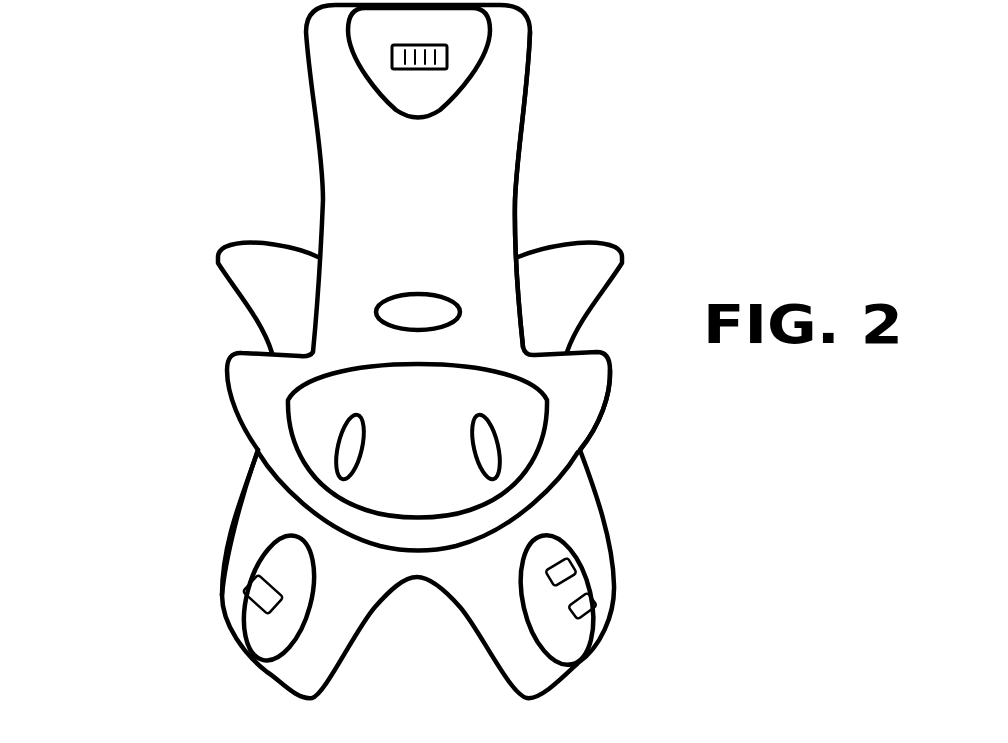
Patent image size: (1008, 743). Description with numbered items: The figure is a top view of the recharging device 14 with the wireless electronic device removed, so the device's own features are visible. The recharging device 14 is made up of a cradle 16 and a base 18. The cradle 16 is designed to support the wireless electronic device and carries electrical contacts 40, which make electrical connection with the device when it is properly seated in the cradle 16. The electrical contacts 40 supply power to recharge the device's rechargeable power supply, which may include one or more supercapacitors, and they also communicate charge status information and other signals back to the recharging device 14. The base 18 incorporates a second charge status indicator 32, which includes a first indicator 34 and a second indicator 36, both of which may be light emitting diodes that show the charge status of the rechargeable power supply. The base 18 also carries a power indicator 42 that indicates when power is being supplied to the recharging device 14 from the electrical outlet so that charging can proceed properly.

The recharging device 14 is at (203, 89).
The cradle 16 is at (518, 162).
The base 18 is at (218, 263).
The second charge status indicator 32 is at (590, 562).
The first indicator 34 is at (545, 572).
The second indicator 36 is at (590, 613).
The electrical contacts 40 is at (447, 54).
The power indicator 42 is at (250, 607).